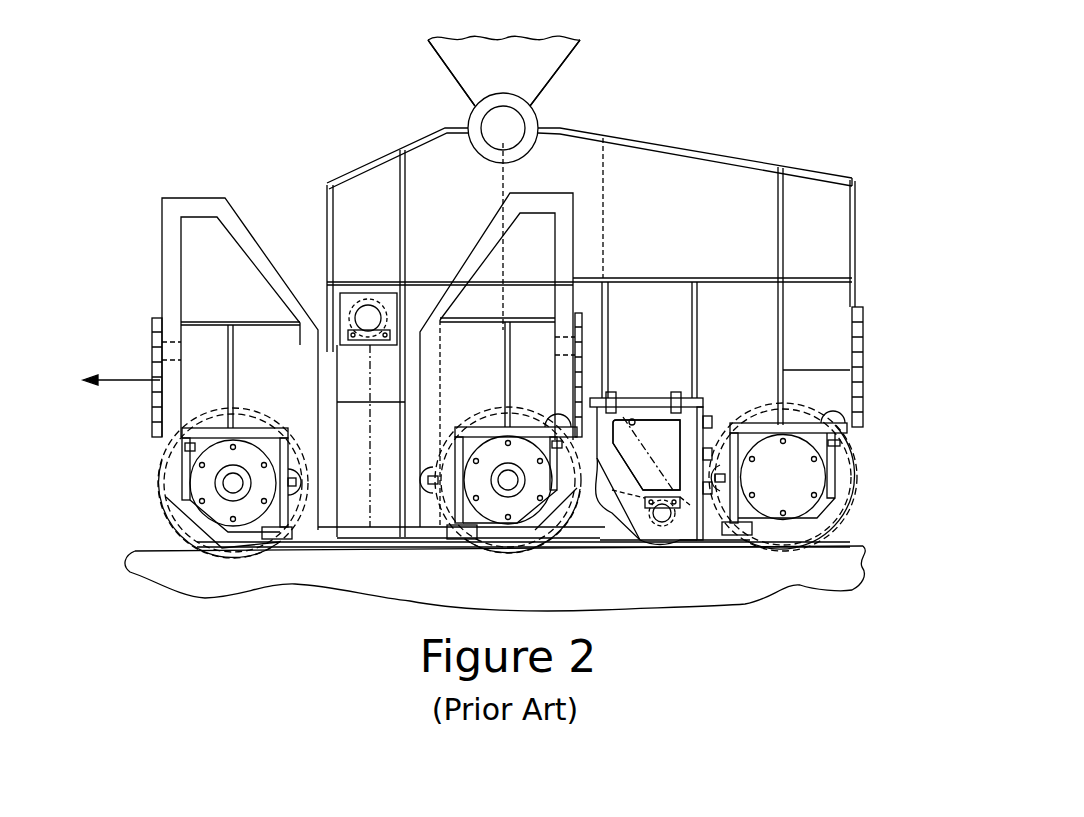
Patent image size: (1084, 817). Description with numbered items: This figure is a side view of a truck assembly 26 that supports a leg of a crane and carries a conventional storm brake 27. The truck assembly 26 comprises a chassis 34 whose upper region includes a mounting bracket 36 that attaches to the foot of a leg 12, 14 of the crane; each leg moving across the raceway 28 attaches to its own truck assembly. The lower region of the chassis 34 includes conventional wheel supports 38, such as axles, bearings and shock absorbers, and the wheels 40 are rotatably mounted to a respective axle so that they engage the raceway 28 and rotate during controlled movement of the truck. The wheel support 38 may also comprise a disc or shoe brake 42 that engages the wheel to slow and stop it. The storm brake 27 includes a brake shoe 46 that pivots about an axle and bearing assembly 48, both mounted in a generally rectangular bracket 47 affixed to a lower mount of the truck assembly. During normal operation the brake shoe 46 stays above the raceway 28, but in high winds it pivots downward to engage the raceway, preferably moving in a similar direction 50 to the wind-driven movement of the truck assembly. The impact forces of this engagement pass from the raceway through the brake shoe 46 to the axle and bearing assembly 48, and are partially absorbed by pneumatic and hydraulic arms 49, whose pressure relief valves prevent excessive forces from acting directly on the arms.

The leg 12 is at (527, 75).
The leg 14 is at (504, 73).
The truck assembly 26 is at (668, 103).
The storm brake 27 is at (705, 536).
The raceway 28 is at (310, 551).
The chassis 34 is at (661, 344).
The mounting bracket 36 is at (539, 117).
The wheel support 38 is at (240, 495).
The wheel 40 is at (165, 524).
The disc or shoe brake 42 is at (247, 467).
The brake shoe 46 is at (660, 526).
The bracket 47 is at (708, 430).
The axle and bearing assembly 48 is at (670, 515).
The pneumatic and hydraulic arms 49 is at (648, 452).
The direction of movement 50 is at (118, 380).